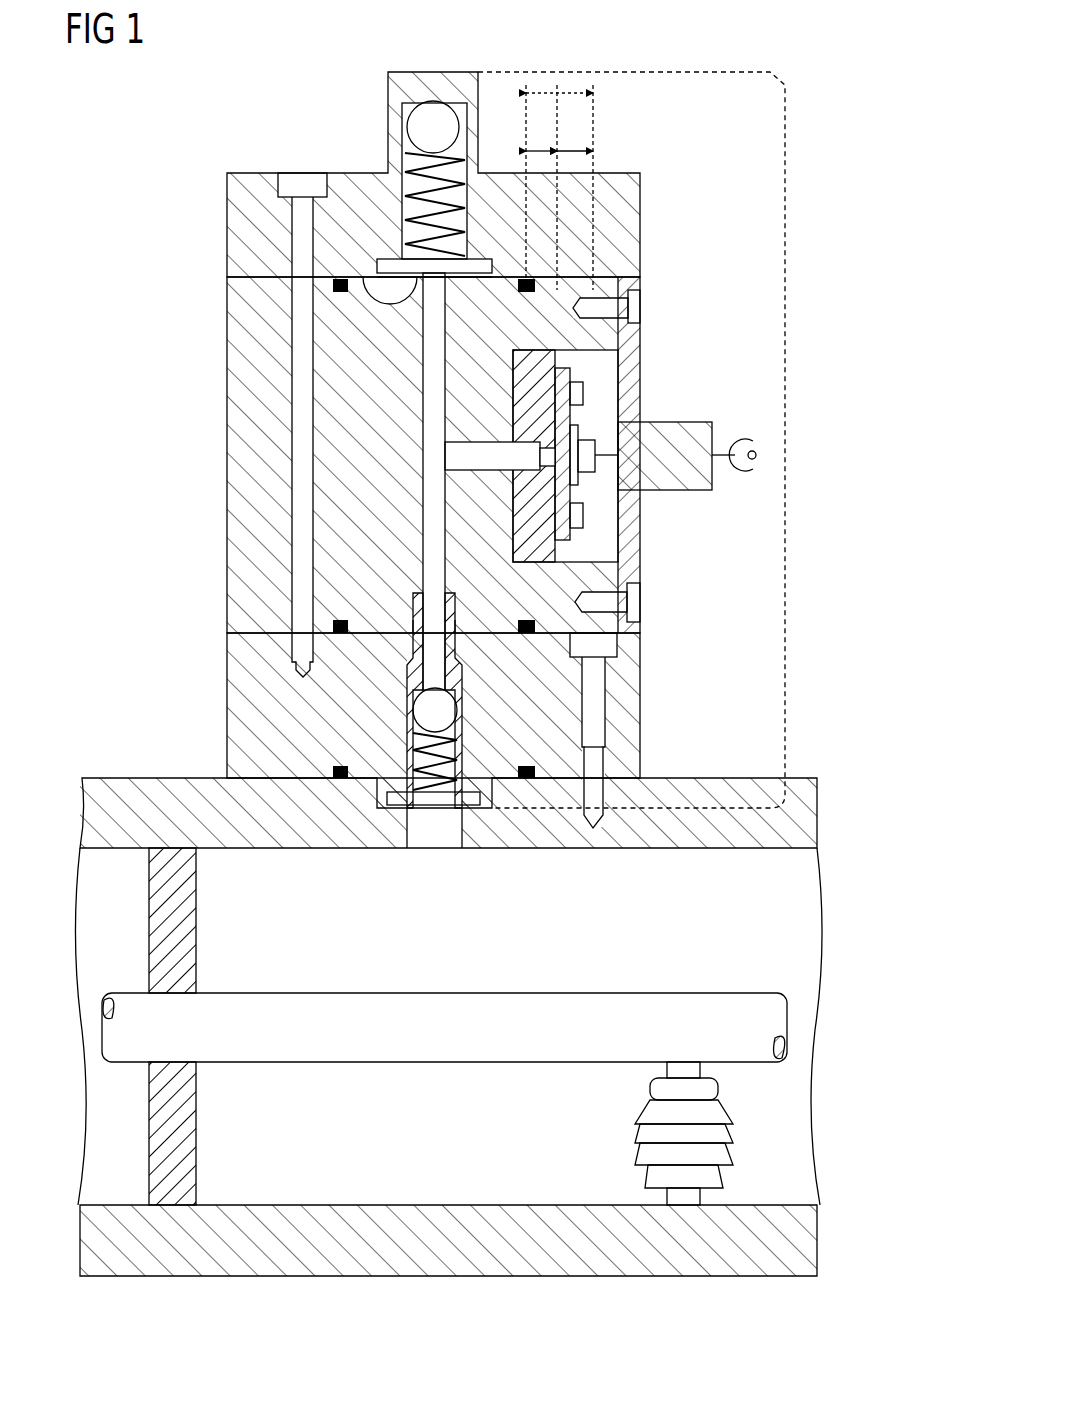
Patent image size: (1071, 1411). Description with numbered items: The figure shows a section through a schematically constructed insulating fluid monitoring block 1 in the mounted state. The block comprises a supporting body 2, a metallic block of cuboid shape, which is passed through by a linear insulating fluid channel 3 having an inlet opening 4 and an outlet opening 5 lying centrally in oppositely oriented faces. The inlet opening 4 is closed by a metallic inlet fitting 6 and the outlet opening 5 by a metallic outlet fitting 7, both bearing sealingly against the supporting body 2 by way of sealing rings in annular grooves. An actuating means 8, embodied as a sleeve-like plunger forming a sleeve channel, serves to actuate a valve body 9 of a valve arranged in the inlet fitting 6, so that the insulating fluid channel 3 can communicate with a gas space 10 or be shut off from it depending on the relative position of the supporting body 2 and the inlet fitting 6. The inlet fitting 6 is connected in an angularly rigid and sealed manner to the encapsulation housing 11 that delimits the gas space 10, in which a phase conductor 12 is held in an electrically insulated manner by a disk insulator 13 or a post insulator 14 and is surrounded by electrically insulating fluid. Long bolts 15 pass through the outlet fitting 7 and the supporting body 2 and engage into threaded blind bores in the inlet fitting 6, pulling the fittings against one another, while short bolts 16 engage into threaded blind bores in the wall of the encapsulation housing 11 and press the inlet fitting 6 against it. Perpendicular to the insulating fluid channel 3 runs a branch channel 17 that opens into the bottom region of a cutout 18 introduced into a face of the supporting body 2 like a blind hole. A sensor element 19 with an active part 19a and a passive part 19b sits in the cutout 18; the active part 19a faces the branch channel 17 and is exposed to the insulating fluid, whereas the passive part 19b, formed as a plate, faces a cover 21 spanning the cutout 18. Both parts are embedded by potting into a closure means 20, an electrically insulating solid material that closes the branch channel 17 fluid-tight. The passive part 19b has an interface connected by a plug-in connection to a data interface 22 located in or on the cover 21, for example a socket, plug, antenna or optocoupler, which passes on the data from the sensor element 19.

The insulating fluid monitoring block 1 is at (785, 440).
The supporting body 2 is at (228, 328).
The insulating fluid channel 3 is at (423, 378).
The inlet opening 4 is at (412, 627).
The outlet opening 5 is at (395, 290).
The inlet fitting 6 is at (640, 672).
The outlet fitting 7 is at (640, 205).
The actuating means 8 is at (413, 595).
The valve body 9 is at (432, 106).
The gas space 10 is at (285, 892).
The encapsulation housing 11 is at (735, 778).
The phase conductor 12 is at (553, 993).
The disk insulator 13 is at (196, 940).
The post insulator 14 is at (733, 1130).
The long bolt 15 is at (300, 175).
The short bolt 16 is at (605, 700).
The branch channel 17 is at (445, 448).
The cutout 18 is at (605, 360).
The sensor element 19 is at (555, 88).
The active part 19a is at (545, 150).
The passive part 19b is at (578, 150).
The closure means 20 is at (563, 545).
The cover 21 is at (640, 513).
The data interface 22 is at (722, 455).